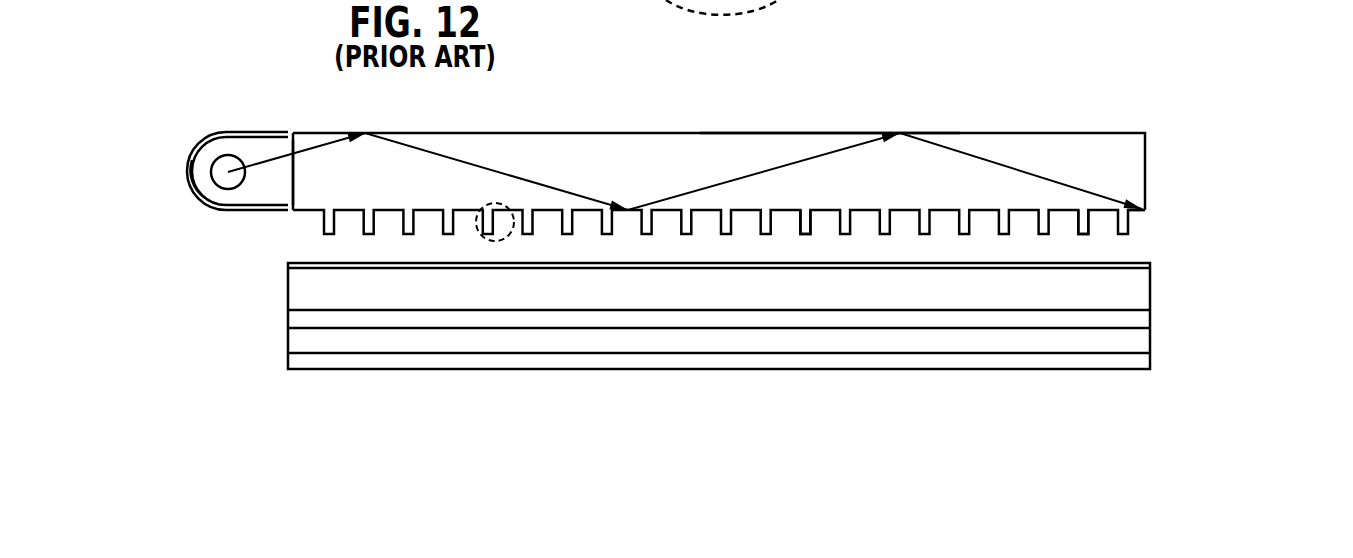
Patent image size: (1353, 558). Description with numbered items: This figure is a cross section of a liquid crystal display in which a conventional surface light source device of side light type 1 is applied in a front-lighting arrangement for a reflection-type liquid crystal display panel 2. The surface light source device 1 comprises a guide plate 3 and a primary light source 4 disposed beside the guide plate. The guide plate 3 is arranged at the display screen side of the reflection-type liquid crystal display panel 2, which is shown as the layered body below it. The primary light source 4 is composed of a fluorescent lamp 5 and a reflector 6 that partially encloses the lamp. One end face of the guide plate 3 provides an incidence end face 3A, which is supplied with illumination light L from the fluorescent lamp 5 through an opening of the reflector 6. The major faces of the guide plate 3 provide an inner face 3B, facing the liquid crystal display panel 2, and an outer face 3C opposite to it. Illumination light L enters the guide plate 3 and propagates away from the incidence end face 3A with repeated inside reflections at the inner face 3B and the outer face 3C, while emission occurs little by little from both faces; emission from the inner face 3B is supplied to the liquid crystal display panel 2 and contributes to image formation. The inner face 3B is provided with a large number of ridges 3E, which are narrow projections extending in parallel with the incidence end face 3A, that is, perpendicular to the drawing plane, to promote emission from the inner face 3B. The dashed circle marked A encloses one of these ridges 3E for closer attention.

The surface light source device of side light type 1 is at (920, 114).
The reflection-type liquid crystal display panel 2 is at (1068, 393).
The guide plate 3 is at (1140, 175).
The incidence end face 3A is at (296, 190).
The inner face 3B is at (1133, 213).
The outer face 3C is at (834, 133).
The ridges 3E is at (813, 235).
The primary light source 4 is at (236, 100).
The fluorescent lamp 5 is at (226, 188).
The reflector 6 is at (192, 200).
The illumination light L is at (568, 192).
The region A is at (488, 207).